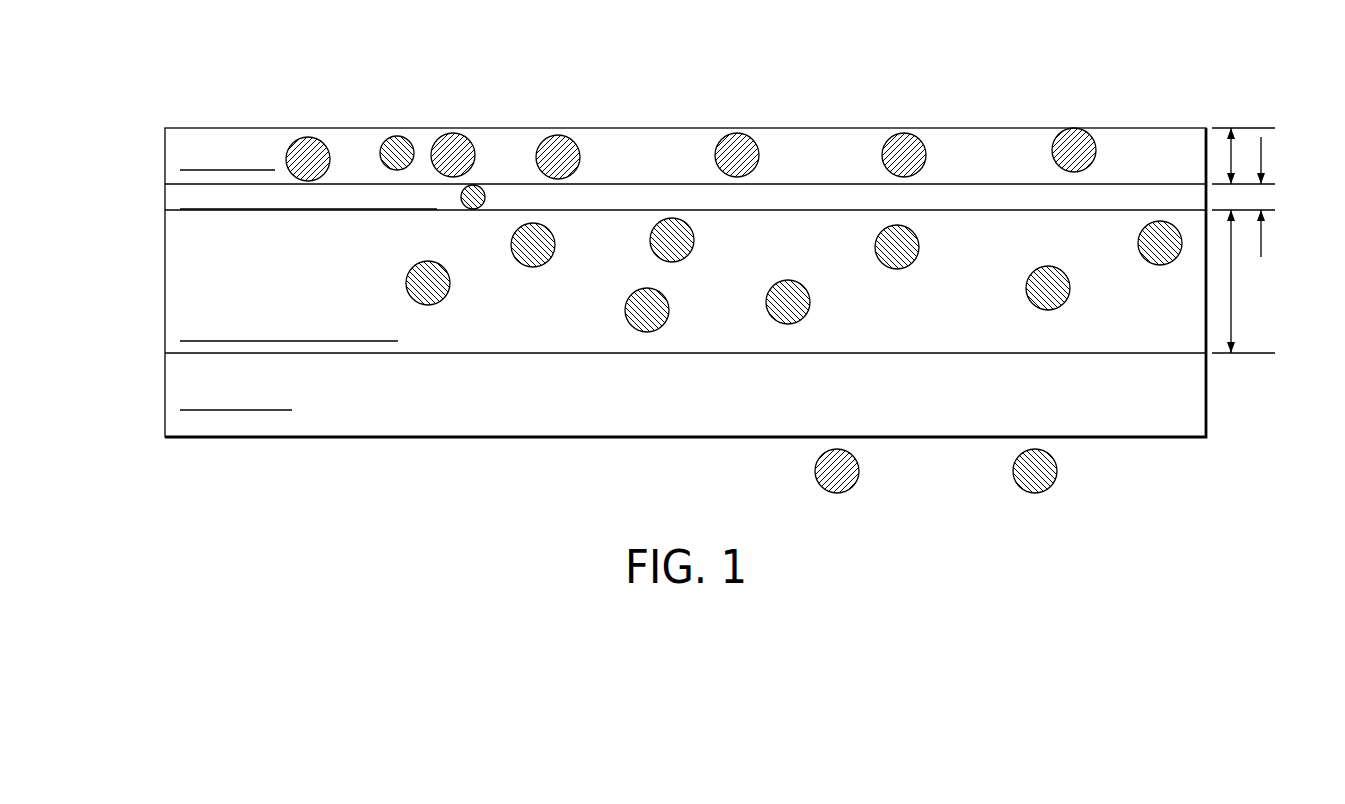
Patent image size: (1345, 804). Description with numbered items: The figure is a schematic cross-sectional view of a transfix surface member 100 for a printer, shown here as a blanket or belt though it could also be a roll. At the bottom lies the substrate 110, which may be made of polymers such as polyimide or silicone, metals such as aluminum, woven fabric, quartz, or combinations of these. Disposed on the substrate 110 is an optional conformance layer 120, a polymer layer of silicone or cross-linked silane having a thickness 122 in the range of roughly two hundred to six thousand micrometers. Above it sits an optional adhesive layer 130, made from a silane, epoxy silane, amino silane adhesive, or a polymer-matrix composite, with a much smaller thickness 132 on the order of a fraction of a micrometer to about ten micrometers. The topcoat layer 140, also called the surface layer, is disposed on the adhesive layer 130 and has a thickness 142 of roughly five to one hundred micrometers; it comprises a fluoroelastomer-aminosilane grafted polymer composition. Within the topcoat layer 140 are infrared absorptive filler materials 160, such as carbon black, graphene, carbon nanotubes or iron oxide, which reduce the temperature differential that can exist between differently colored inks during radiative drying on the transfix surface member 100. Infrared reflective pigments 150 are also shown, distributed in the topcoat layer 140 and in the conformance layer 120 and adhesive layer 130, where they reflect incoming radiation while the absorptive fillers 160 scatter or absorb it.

The transfix surface member 100 is at (308, 72).
The substrate 110 is at (165, 397).
The conformance layer 120 is at (165, 284).
The thickness of the conformance layer 122 is at (1233, 281).
The adhesive layer 130 is at (165, 200).
The thickness of the adhesive layer 132 is at (1263, 152).
The topcoat layer 140 is at (165, 157).
The thickness of the topcoat layer 142 is at (1233, 155).
The infrared reflective pigments 150 is at (478, 185).
The infrared absorptive filler materials 160 is at (759, 149).